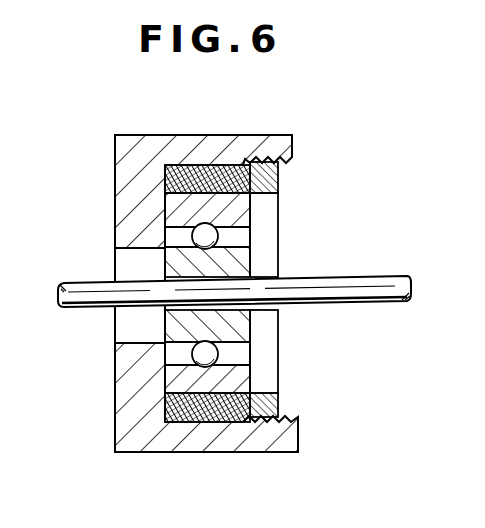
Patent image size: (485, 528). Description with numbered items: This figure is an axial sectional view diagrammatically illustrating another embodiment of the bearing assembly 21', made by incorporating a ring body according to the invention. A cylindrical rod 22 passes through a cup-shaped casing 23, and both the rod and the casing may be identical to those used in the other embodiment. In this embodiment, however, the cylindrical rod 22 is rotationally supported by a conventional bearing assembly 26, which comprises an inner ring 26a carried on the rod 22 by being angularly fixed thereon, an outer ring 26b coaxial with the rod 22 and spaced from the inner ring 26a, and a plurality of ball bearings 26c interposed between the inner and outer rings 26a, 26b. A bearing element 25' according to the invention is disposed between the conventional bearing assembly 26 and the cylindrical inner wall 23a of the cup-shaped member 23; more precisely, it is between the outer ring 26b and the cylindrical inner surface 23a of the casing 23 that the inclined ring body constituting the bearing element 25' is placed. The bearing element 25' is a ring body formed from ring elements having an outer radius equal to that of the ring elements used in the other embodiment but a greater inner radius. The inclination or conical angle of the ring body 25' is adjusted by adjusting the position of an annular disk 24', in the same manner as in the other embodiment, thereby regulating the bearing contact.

The bearing assembly 21' is at (283, 227).
The cylindrical rod 22 is at (383, 275).
The cup-shaped casing 23 is at (181, 448).
The cylindrical inner wall 23a is at (163, 167).
The annular disk 24' is at (313, 282).
The bearing element 25' is at (219, 298).
The conventional bearing assembly 26 is at (258, 371).
The inner ring 26a is at (163, 258).
The outer ring 26b is at (163, 205).
The ball bearings 26c is at (217, 233).